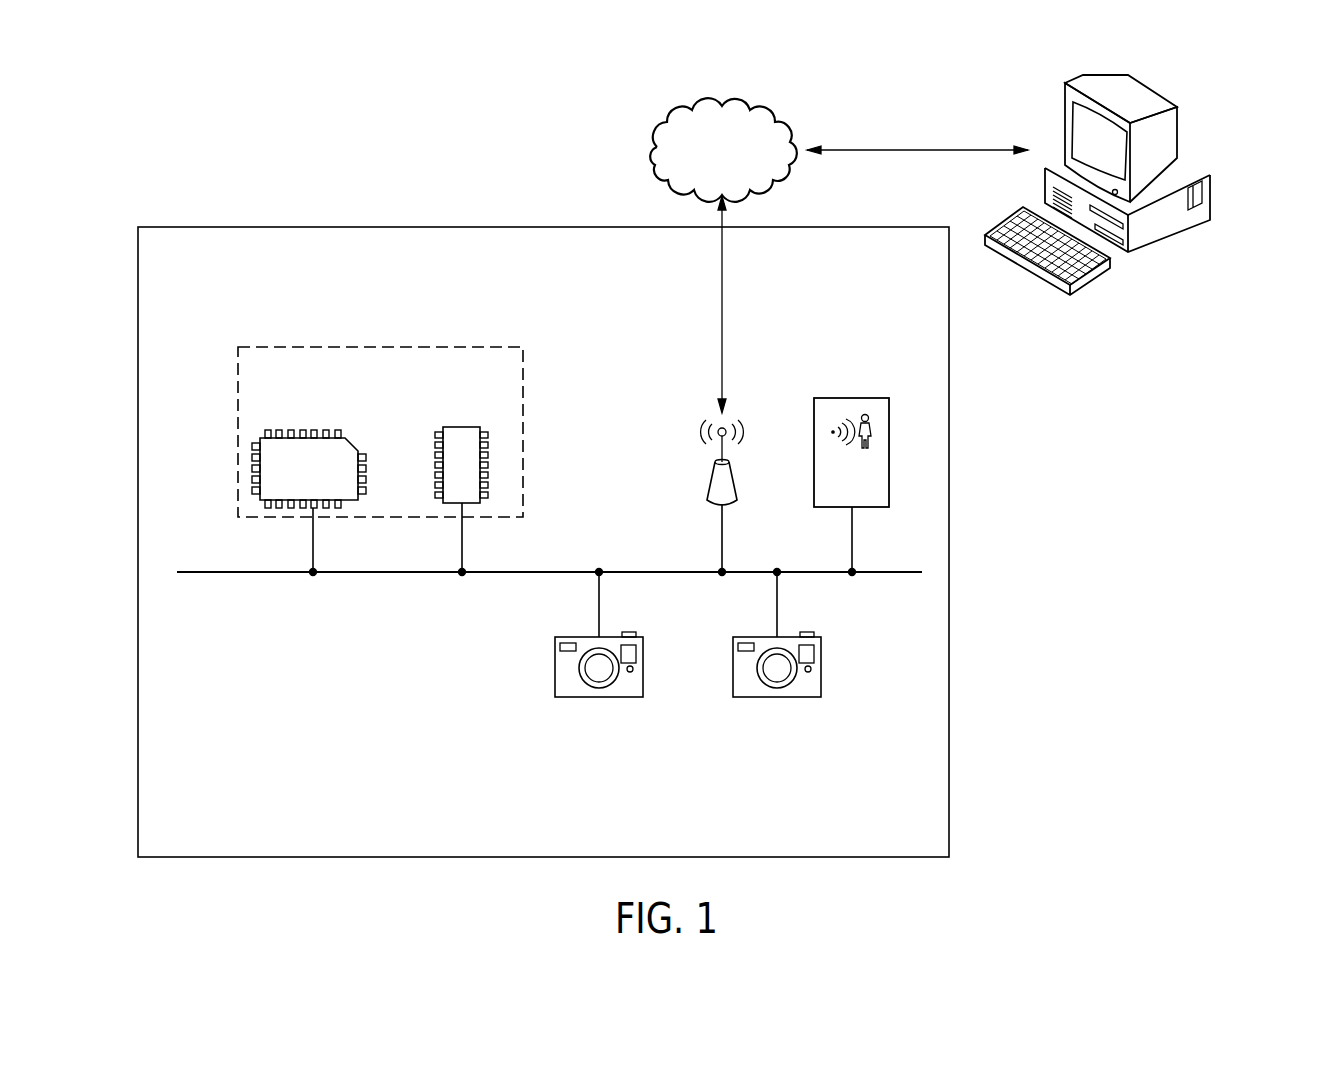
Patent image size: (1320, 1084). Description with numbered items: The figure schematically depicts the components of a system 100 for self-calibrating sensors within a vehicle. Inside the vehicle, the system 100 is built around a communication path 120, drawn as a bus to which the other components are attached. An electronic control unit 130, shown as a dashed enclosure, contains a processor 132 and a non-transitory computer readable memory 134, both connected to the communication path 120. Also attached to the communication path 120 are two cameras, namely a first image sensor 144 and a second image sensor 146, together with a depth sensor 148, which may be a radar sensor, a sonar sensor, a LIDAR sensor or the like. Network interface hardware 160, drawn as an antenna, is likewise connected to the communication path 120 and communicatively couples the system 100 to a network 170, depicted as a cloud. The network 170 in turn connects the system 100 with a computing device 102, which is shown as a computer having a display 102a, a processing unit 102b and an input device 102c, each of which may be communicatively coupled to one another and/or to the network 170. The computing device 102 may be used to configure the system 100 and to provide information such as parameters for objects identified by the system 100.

The system 100 is at (226, 138).
The computing device 102 is at (1133, 186).
The display 102a is at (1066, 96).
The processing unit 102b is at (1157, 231).
The input device 102c is at (1085, 282).
The communication path 120 is at (224, 572).
The electronic control unit 130 is at (523, 497).
The processor 132 is at (347, 438).
The non-transitory computer readable memory 134 is at (462, 427).
The first image sensor 144 is at (599, 700).
The second image sensor 146 is at (777, 700).
The depth sensor 148 is at (852, 398).
The network interface hardware 160 is at (714, 470).
The network 170 is at (650, 148).